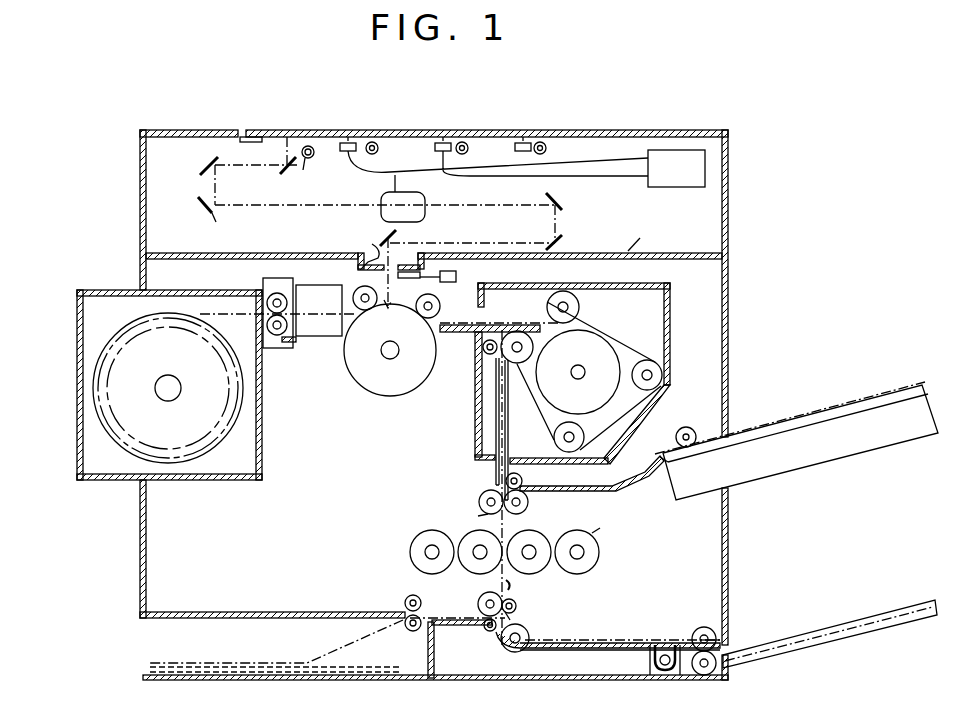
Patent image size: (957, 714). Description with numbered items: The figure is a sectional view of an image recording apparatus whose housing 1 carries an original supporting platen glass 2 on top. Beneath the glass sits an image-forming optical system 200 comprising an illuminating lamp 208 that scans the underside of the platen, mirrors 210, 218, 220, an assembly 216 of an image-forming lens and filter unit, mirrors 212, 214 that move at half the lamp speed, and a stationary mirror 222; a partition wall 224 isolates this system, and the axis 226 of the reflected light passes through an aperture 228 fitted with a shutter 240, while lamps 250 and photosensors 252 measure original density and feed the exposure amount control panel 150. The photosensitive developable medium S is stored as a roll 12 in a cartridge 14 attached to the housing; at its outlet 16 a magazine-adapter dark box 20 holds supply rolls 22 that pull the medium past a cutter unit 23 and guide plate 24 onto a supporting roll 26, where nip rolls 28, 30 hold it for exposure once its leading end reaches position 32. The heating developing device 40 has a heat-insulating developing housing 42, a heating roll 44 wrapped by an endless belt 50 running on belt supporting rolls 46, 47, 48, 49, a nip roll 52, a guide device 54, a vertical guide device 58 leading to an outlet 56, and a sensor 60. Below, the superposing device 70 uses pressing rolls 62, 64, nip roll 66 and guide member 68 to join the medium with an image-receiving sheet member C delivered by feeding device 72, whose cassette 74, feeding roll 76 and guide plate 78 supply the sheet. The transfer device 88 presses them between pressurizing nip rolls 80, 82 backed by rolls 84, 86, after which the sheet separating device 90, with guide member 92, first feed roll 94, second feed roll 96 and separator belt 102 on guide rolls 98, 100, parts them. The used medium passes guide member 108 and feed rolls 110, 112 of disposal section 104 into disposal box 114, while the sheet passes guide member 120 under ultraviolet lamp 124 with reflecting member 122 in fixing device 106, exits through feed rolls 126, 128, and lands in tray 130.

The housing 1 is at (140, 532).
The original supporting platen glass 2 is at (264, 131).
The roll 12 is at (108, 396).
The cartridge 14 is at (215, 480).
The outlet 16 is at (257, 310).
The magazine-adapter dark box 20 is at (270, 278).
The photosensitive developable medium supply rolls 22 is at (296, 340).
The cutter unit 23 is at (306, 286).
The guide plate 24 is at (348, 340).
The photosensitive medium supporting roll 26 is at (365, 385).
The nip roll 28 is at (362, 286).
The nip roll 30 is at (441, 310).
The position 32 is at (379, 340).
The heating developing device 40 is at (617, 256).
The heat-insulating developing housing 42 is at (672, 315).
The heating roll 44 is at (590, 340).
The belt supporting roll 46 is at (566, 292).
The belt supporting roll 47 is at (662, 377).
The belt supporting roll 48 is at (575, 453).
The belt supporting roll 49 is at (512, 330).
The endless belt 50 is at (616, 333).
The nip roll 52 is at (475, 360).
The guide device 54 is at (482, 345).
The outlet 56 is at (505, 452).
The vertical guide device 58 is at (495, 405).
The sensor 60 is at (478, 462).
The pressing roll 62 is at (478, 500).
The pressing roll 64 is at (526, 506).
The nip roll 66 is at (523, 481).
The guide member 68 is at (496, 478).
The image-receiving sheet member superposing device 70 is at (479, 519).
The image-receiving sheet member feeding device 72 is at (743, 422).
The image-receiving sheet member feeding cassette 74 is at (856, 402).
The image-receiving sheet member feeding roll 76 is at (682, 426).
The guide plate 78 is at (636, 488).
The pressurizing nip roll 80 is at (474, 572).
The pressurizing nip roll 82 is at (532, 538).
The back-up roll 84 is at (410, 546).
The back-up roll 86 is at (595, 562).
The transfer device 88 is at (598, 532).
The sheet separating device 90 is at (558, 587).
The guide member 92 is at (514, 598).
The first feed roll 94 is at (477, 606).
The second feed roll 96 is at (560, 648).
The guide roll 98 is at (497, 648).
The guide roll 100 is at (516, 614).
The separator belt 102 is at (498, 626).
The photosensitive medium disposal section 104 is at (357, 666).
The fixing device 106 is at (683, 614).
The guide member 108 is at (460, 649).
The feed roll 110 is at (406, 600).
The feed roll 112 is at (413, 633).
The disposal box 114 is at (330, 681).
The guide member 120 is at (588, 660).
The reflecting member 122 is at (650, 680).
The ultraviolet lamp 124 is at (656, 647).
The feed roll 126 is at (718, 632).
The feed roll 128 is at (724, 678).
The tray 130 is at (848, 642).
The exposure amount control panel 150 is at (685, 188).
The image-forming optical system 200 is at (400, 142).
The illuminating lamp 208 is at (304, 170).
The mirror 210 is at (280, 168).
The mirror 212 is at (202, 168).
The mirror 214 is at (197, 220).
The assembly of image-forming lens and filter unit 216 is at (426, 195).
The mirror 218 is at (564, 207).
The mirror 220 is at (563, 241).
The stationary mirror 222 is at (378, 232).
The partition wall 224 is at (662, 251).
The axis of the light 226 is at (330, 205).
The aperture 228 is at (366, 248).
The shutter 240 is at (404, 265).
The lamps 250 is at (370, 141).
The photosensors 252 is at (342, 135).
The photosensitive developable medium S is at (118, 325).
The image-receiving sheet member C is at (782, 420).